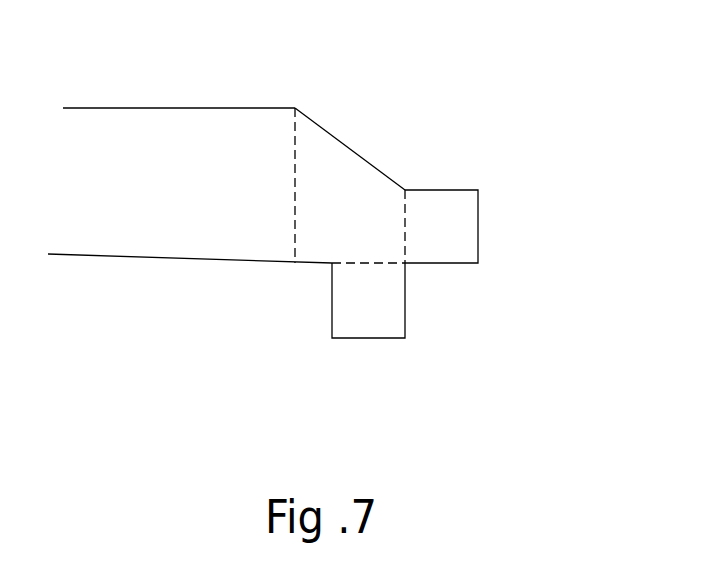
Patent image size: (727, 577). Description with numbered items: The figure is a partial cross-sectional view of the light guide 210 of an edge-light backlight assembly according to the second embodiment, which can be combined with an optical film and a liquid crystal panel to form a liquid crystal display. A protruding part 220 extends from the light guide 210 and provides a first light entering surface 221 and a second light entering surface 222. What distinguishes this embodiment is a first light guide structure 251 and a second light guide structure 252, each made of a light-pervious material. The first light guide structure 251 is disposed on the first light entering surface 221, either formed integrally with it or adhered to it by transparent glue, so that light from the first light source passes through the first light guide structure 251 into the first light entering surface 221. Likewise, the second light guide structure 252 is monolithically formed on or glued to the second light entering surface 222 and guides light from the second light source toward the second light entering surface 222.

The light guide 210 is at (161, 135).
The protruding part 220 is at (330, 167).
The first light entering surface 221 is at (405, 240).
The second light entering surface 222 is at (358, 262).
The first light guide structure 251 is at (443, 215).
The second light guide structure 252 is at (368, 308).